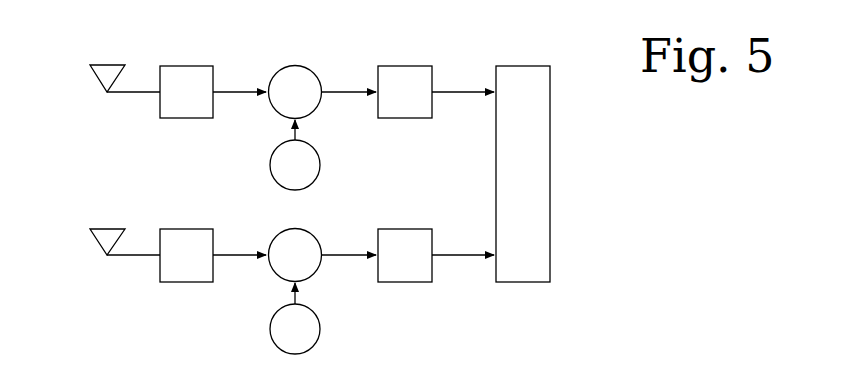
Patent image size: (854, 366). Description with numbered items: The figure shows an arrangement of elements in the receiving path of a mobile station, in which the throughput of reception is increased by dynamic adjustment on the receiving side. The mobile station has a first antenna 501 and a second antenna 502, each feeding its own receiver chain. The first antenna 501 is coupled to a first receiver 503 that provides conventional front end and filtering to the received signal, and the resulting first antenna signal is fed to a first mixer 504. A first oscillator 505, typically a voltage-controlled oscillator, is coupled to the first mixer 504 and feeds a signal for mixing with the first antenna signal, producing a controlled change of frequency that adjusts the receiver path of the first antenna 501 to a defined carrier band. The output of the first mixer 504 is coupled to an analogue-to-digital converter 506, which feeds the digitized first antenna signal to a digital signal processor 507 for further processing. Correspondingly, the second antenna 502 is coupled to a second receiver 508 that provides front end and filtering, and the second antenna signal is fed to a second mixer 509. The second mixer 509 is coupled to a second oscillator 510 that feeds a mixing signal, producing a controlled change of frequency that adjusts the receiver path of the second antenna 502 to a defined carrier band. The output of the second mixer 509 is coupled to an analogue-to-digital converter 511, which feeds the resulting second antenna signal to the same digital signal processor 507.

The first antenna 501 is at (105, 65).
The second antenna 502 is at (105, 229).
The first receiver 503 is at (186, 66).
The first mixer 504 is at (284, 67).
The first oscillator 505 is at (270, 164).
The analogue-to-digital converter 506 is at (406, 66).
The digital signal processor 507 is at (526, 66).
The second receiver 508 is at (186, 229).
The second mixer 509 is at (284, 230).
The second oscillator 510 is at (270, 327).
The analogue-to-digital converter 511 is at (406, 229).